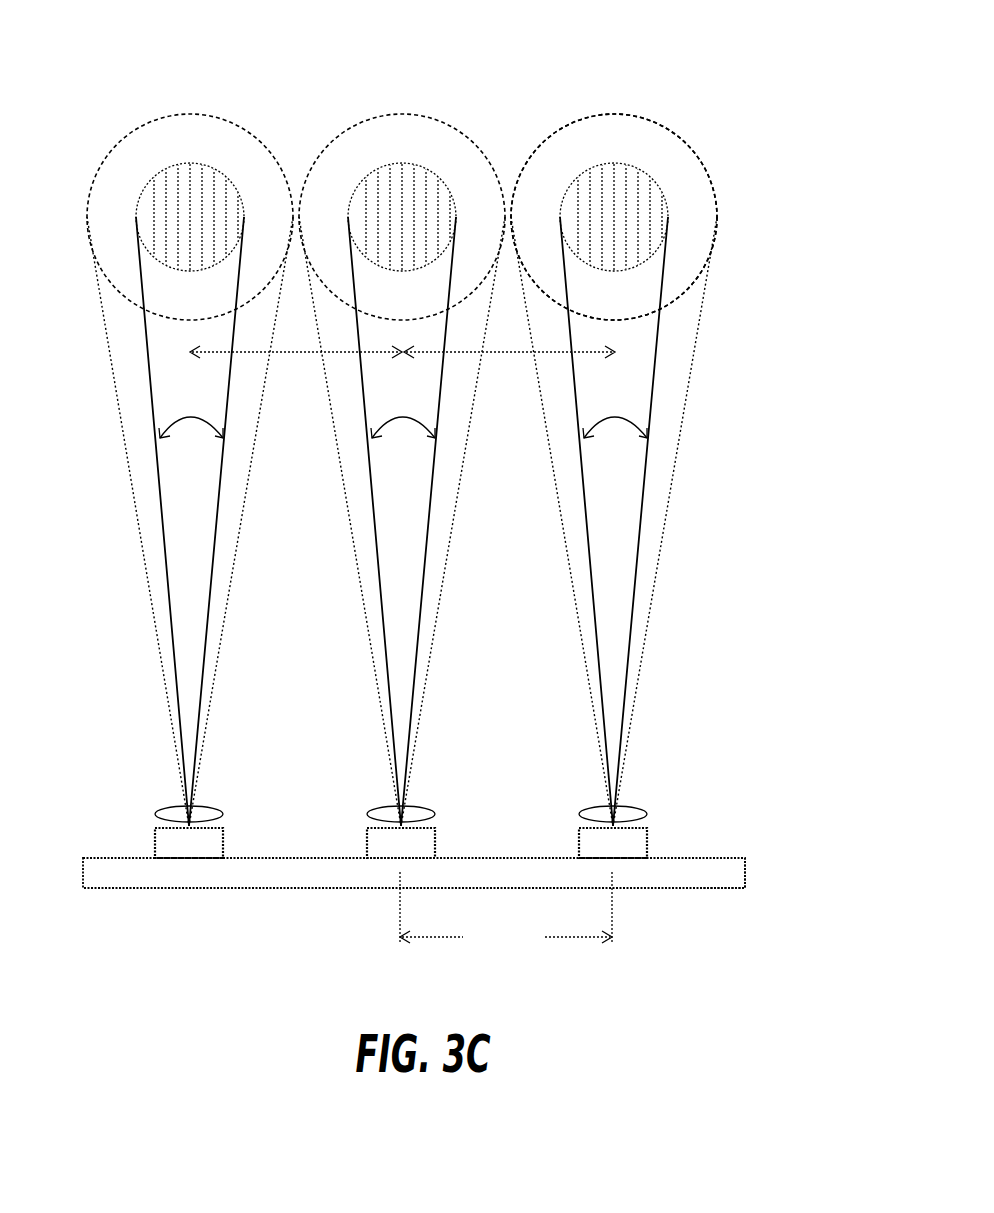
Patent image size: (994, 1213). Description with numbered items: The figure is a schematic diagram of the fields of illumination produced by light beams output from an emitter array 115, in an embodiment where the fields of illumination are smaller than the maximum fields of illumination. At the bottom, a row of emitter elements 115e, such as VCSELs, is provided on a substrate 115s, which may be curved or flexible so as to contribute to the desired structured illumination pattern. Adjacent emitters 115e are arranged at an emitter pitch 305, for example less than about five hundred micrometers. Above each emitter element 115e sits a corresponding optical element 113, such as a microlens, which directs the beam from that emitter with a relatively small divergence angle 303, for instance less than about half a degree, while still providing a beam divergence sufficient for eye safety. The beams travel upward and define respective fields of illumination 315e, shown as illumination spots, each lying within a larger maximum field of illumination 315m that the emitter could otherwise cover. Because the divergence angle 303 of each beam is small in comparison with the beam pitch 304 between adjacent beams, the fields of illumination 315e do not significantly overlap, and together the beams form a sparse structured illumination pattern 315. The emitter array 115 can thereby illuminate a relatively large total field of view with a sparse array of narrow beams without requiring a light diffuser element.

The structured illumination pattern 315 is at (70, 105).
The field of illumination 315e is at (402, 217).
The maximum field of illumination 315m is at (698, 215).
The beam pitch 304 is at (738, 395).
The divergence angle 303 is at (673, 485).
The optical element 113 is at (695, 770).
The emitter element 115e is at (401, 843).
The emitter array 115 is at (414, 873).
The substrate 115s is at (712, 888).
The emitter pitch 305 is at (506, 921).